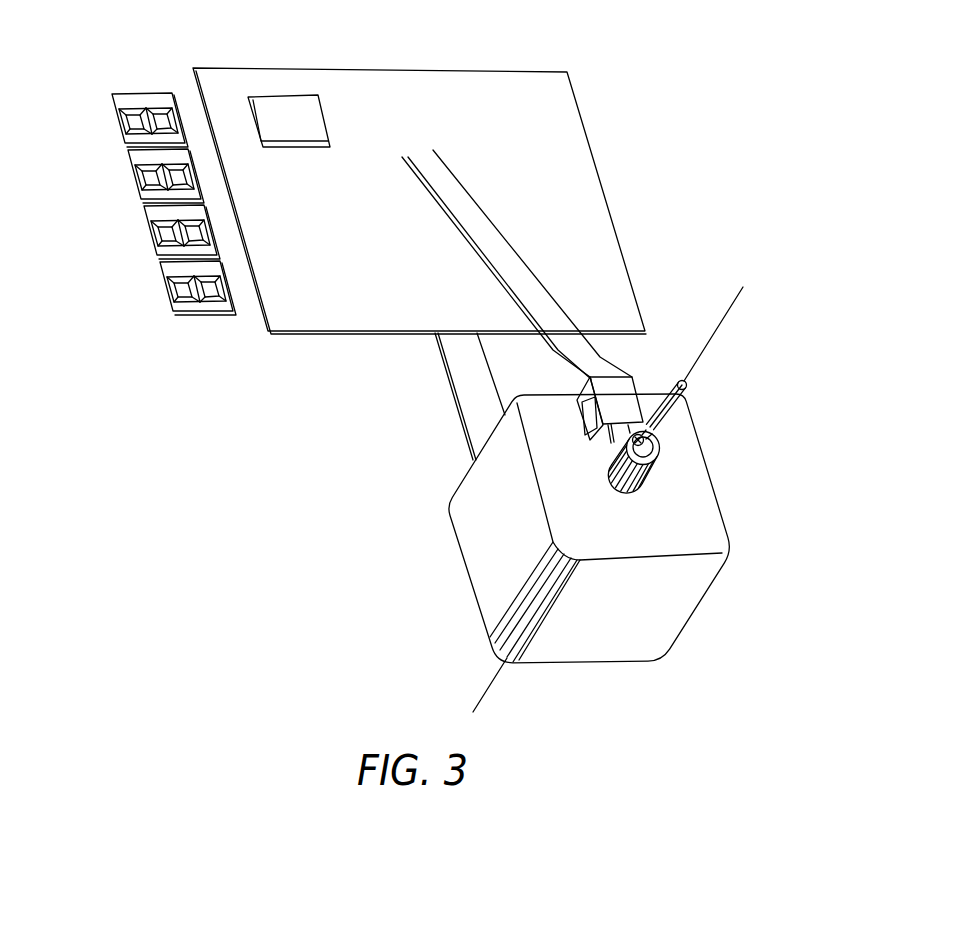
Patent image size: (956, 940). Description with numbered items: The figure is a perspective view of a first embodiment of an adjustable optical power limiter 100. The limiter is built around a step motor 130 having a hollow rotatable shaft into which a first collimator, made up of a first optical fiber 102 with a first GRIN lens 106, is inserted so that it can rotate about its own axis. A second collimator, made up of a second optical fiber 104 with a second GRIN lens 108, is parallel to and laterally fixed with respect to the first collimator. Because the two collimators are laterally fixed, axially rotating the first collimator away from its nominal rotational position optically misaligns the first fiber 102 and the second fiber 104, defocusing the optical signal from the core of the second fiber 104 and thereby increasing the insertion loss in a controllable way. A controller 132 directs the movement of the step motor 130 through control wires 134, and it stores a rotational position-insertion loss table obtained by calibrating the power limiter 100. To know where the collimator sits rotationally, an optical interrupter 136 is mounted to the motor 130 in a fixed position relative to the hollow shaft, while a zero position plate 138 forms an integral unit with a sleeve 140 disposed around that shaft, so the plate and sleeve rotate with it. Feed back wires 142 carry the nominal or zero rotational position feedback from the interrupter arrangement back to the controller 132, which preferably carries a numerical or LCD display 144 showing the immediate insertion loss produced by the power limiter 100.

The adjustable optical power limiter 100 is at (741, 127).
The first optical fiber 102 is at (485, 682).
The second optical fiber 104 is at (733, 311).
The first GRIN lens 106 is at (677, 435).
The second GRIN lens 108 is at (684, 393).
The step motor 130 is at (692, 532).
The controller 132 is at (463, 88).
The control wires 134 is at (492, 382).
The optical interrupter 136 is at (627, 387).
The zero position plate 138 is at (612, 440).
The sleeve 140 is at (667, 460).
The feed back wires 142 is at (452, 215).
The numerical or LCD display 144 is at (165, 268).